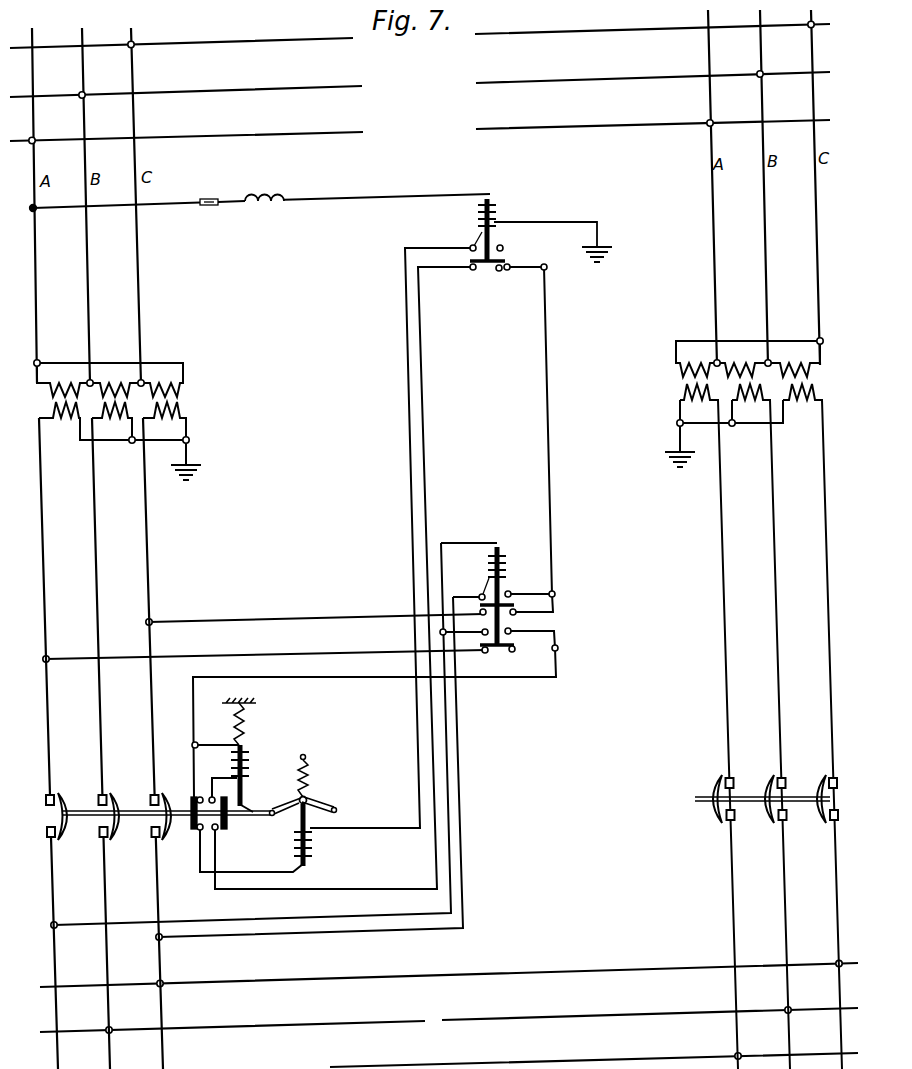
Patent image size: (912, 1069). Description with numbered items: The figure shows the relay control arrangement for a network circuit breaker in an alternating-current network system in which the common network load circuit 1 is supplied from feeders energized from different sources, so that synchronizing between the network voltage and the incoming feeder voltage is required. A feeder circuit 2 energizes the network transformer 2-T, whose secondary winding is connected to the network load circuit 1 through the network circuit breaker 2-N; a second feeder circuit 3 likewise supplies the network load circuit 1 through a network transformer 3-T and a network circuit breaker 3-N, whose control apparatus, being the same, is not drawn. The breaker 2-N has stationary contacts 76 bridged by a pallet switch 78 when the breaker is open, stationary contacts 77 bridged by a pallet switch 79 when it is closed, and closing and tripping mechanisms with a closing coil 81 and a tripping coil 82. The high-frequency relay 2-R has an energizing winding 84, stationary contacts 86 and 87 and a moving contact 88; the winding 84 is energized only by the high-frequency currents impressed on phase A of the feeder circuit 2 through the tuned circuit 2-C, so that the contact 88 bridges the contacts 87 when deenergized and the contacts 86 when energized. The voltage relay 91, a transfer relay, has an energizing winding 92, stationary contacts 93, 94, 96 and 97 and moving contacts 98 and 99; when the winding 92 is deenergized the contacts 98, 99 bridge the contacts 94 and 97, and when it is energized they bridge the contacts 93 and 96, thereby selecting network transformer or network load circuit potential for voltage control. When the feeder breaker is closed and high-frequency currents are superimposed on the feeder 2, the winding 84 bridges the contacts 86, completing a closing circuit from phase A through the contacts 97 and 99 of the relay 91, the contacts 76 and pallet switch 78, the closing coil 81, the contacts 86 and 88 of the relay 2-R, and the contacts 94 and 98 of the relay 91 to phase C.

The network load circuit 1 is at (420, 1067).
The feeder circuit 2 is at (217, 133).
The feeder circuit 3 is at (615, 122).
The tuned circuit 2-C is at (260, 211).
The high-frequency relay 2-R is at (522, 218).
The network transformer 2-T is at (129, 420).
The network transformer 3-T is at (739, 703).
The network circuit breaker 2-N is at (60, 821).
The network circuit breaker 3-N is at (700, 802).
The energizing winding 84 is at (483, 199).
The stationary contacts 86 is at (503, 250).
The stationary contacts 87 is at (517, 262).
The moving contact 88 is at (470, 266).
The voltage relay 91 is at (502, 595).
The energizing winding 92 is at (490, 553).
The stationary contacts 93 is at (511, 595).
The stationary contacts 94 is at (515, 612).
The stationary contacts 96 is at (511, 632).
The stationary contacts 97 is at (514, 650).
The moving contact 98 is at (471, 604).
The moving contact 99 is at (489, 648).
The stationary contacts 76 is at (198, 831).
The stationary contacts 77 is at (217, 830).
The pallet switch 78 is at (191, 821).
The pallet switch 79 is at (228, 826).
The closing coil 81 is at (313, 856).
The tripping coil 82 is at (244, 762).